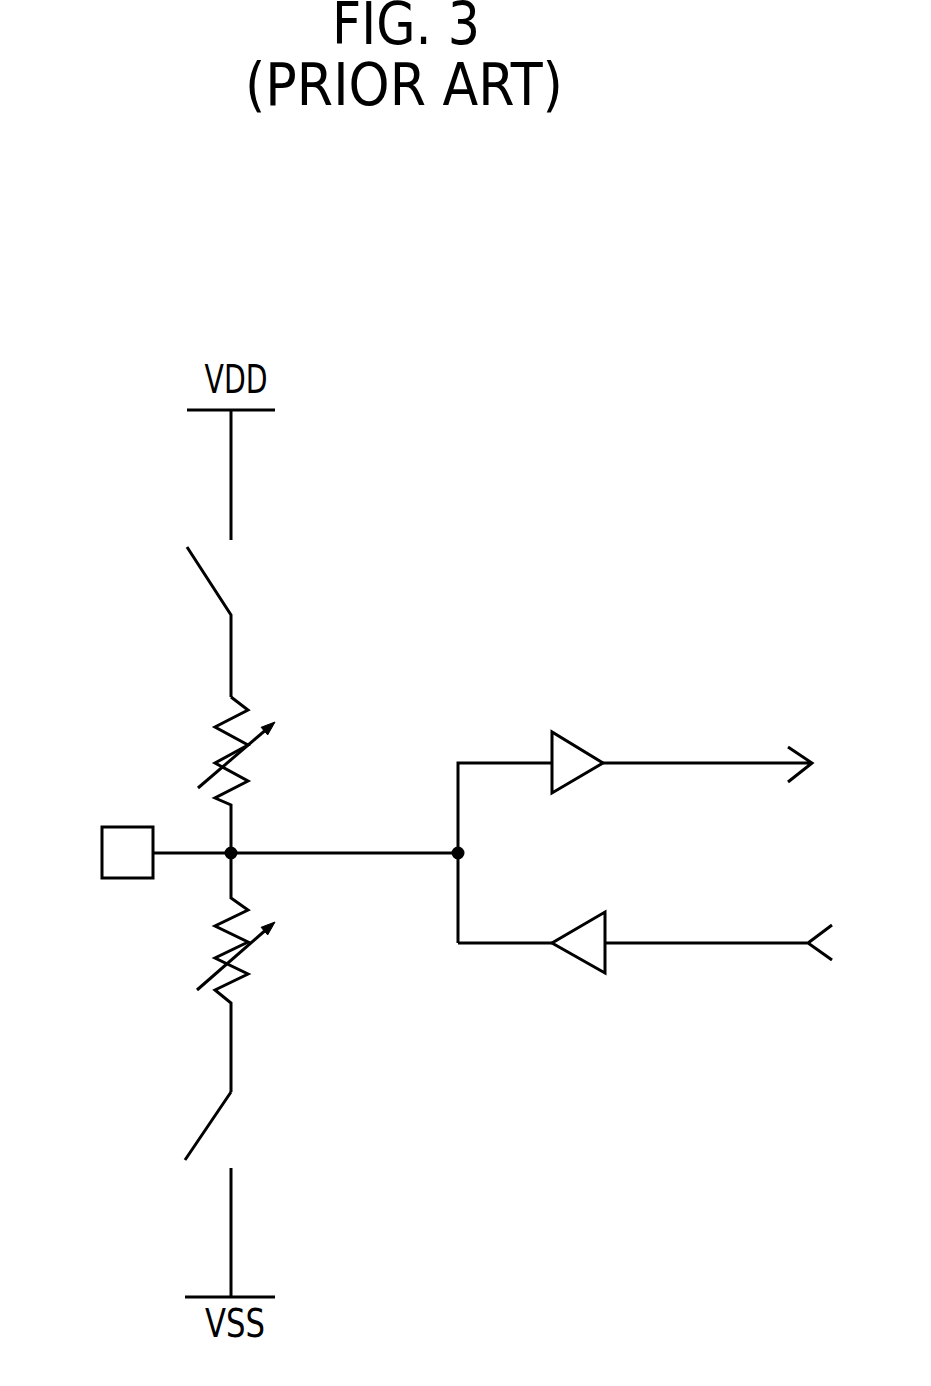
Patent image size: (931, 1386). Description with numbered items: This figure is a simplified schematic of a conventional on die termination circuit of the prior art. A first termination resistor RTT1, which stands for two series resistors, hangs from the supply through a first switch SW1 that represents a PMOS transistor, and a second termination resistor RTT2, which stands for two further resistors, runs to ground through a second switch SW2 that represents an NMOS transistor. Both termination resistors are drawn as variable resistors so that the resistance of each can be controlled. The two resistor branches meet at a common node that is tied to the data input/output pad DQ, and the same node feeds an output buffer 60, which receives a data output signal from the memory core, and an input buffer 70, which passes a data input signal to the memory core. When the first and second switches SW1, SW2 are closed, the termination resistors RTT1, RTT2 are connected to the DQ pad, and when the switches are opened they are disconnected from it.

The output buffer 60 is at (583, 742).
The input buffer 70 is at (582, 923).
The first switch SW1 is at (258, 622).
The second switch SW2 is at (258, 1194).
The first termination resistor RTT1 is at (201, 775).
The second termination resistor RTT2 is at (201, 972).
The data input/output pad DQ is at (106, 852).